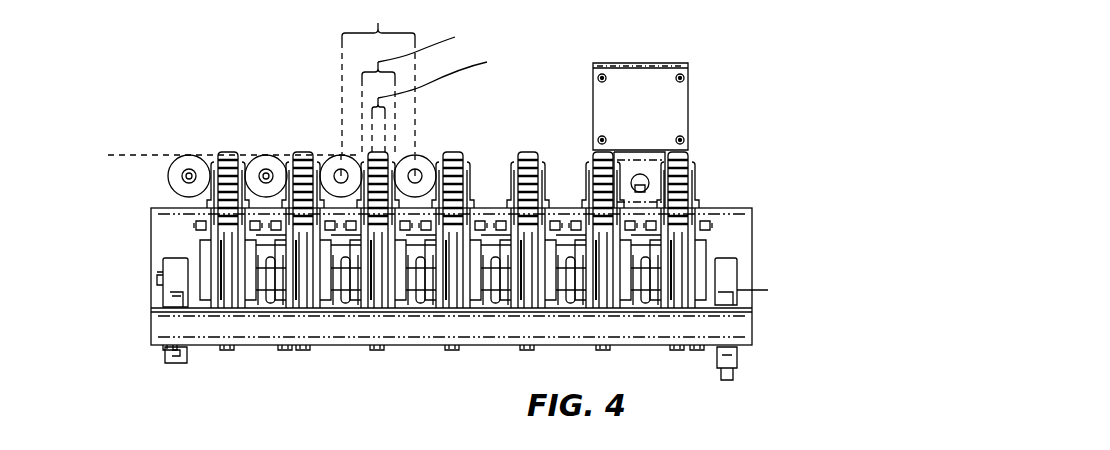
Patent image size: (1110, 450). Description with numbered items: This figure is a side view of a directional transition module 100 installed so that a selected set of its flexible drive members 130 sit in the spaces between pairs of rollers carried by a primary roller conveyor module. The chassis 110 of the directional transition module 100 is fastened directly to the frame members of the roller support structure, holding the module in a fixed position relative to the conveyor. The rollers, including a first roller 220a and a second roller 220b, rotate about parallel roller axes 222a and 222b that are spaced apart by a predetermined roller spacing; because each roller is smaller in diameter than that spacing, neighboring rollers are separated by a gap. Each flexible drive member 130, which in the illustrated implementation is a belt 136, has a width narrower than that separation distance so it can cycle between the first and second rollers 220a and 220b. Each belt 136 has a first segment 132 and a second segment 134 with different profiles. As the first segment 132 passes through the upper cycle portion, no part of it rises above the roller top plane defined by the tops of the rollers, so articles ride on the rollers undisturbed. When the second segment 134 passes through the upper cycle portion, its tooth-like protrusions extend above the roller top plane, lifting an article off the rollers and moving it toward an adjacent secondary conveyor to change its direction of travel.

The directional transition module 100 is at (456, 201).
The chassis 110 is at (740, 240).
The flexible drive member 130 is at (184, 209).
The belt 136 is at (222, 155).
The second segment 134 is at (230, 153).
The first segment 132 is at (227, 288).
The first roller 220a is at (130, 237).
The second roller 220b is at (264, 176).
The first roller axis 222a is at (170, 174).
The second roller axis 222b is at (262, 186).